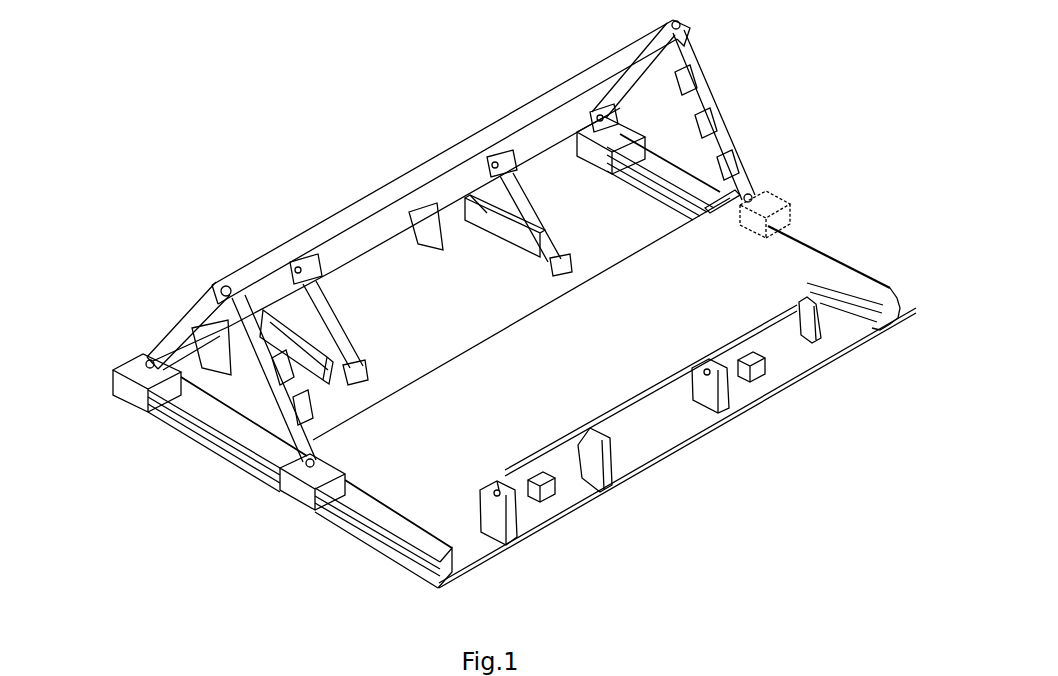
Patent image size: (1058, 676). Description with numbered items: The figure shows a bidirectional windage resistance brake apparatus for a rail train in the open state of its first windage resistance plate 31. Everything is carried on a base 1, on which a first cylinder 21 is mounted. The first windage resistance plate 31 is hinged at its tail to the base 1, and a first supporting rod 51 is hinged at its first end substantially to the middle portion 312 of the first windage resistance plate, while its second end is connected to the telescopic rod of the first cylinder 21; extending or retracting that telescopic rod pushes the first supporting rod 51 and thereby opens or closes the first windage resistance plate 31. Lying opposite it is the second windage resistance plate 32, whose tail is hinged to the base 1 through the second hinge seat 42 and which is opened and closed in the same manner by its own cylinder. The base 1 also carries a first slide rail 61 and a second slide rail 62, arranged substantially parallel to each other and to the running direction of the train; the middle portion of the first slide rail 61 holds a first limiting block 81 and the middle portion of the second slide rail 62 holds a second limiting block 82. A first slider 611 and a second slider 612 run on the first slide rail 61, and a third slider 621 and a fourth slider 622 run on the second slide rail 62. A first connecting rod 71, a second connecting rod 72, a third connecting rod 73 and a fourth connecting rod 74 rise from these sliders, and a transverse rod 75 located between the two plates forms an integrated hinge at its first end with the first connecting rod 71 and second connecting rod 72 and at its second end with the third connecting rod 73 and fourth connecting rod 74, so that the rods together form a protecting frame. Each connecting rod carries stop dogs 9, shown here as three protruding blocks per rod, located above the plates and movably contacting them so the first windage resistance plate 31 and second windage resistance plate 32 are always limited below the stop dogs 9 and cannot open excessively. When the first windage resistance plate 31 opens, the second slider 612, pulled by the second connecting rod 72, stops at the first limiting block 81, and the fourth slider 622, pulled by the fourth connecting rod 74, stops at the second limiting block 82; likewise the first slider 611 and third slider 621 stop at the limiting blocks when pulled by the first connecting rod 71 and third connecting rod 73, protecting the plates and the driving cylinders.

The base 1 is at (778, 353).
The stop dog 9 is at (687, 77).
The first cylinder 21 is at (487, 213).
The first windage resistance plate 31 is at (320, 257).
The middle portion of first windage resistance plate 312 is at (320, 257).
The second windage resistance plate 32 is at (650, 357).
The second hinge seat 42 is at (590, 455).
The first supporting rod 51 is at (345, 333).
The first slide rail 61 is at (365, 520).
The first slider 611 is at (135, 393).
The second slider 612 is at (305, 493).
The second slide rail 62 is at (850, 282).
The third slider 621 is at (607, 118).
The fourth slider 622 is at (777, 215).
The first connecting rod 71 is at (182, 330).
The second connecting rod 72 is at (272, 398).
The third connecting rod 73 is at (612, 92).
The fourth connecting rod 74 is at (722, 137).
The transverse rod 75 is at (380, 197).
The first limiting block 81 is at (275, 472).
The second limiting block 82 is at (733, 197).